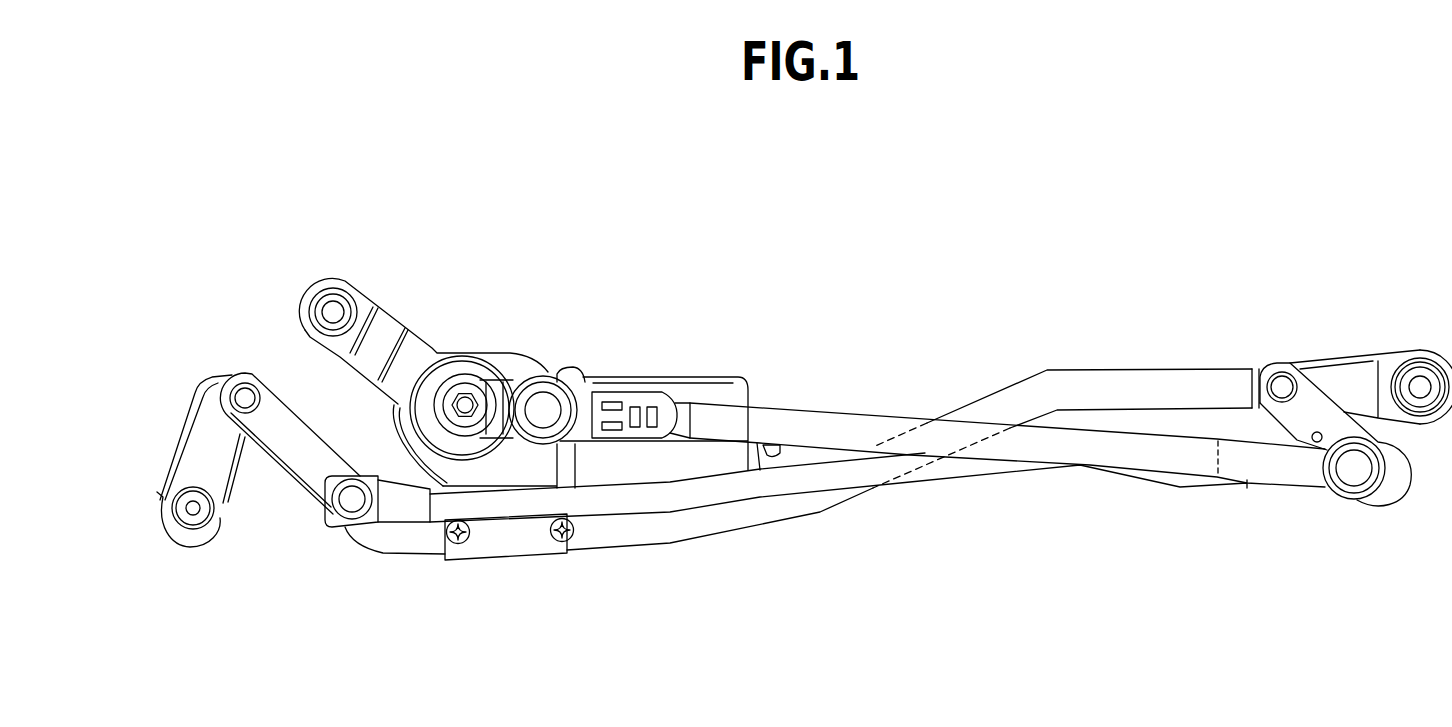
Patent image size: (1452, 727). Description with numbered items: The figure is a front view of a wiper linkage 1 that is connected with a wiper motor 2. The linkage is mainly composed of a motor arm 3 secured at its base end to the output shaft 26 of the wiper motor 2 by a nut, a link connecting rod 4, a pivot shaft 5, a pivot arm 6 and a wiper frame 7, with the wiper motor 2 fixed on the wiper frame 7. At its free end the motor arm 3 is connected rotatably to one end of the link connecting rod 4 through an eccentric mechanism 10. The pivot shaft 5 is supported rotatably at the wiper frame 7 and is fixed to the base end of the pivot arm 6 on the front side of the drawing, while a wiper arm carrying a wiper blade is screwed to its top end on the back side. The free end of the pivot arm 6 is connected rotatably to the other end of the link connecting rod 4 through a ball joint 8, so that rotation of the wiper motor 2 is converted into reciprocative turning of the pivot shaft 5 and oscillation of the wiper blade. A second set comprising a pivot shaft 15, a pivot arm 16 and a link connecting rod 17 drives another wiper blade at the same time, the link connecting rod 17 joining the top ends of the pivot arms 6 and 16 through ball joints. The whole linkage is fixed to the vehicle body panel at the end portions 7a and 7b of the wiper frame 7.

The wiper linkage 1 is at (880, 255).
The wiper motor 2 is at (720, 392).
The motor arm 3 is at (497, 385).
The link connecting rod 4 is at (837, 430).
The pivot shaft 5 is at (1282, 378).
The pivot arm 6 is at (1290, 420).
The wiper frame 7 is at (1048, 390).
The end portion of wiper frame 7a is at (1420, 380).
The end portion of wiper frame 7b is at (200, 520).
The ball joint 8 is at (1354, 468).
The eccentric mechanism 10 is at (579, 389).
The pivot shaft 15 is at (244, 398).
The pivot arm 16 is at (287, 417).
The link connecting rod 17 is at (623, 503).
The output shaft 26 is at (465, 405).